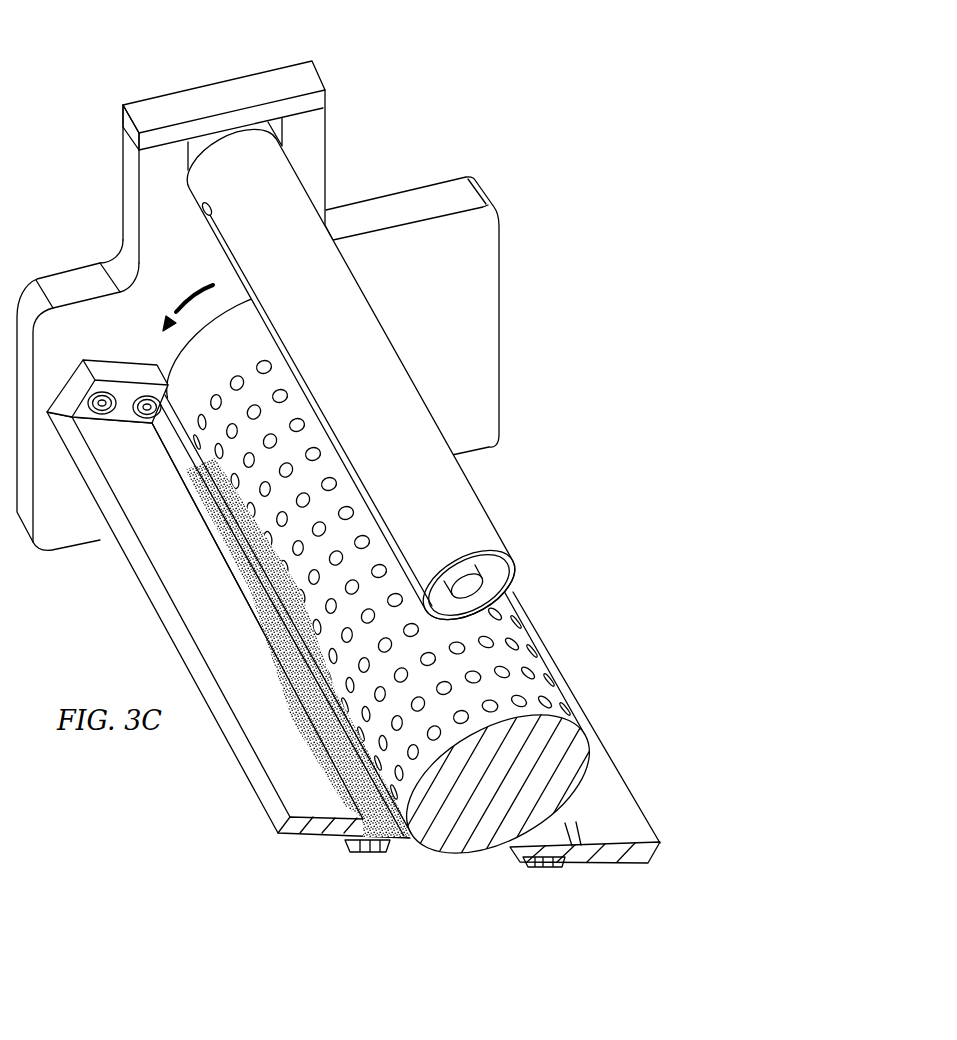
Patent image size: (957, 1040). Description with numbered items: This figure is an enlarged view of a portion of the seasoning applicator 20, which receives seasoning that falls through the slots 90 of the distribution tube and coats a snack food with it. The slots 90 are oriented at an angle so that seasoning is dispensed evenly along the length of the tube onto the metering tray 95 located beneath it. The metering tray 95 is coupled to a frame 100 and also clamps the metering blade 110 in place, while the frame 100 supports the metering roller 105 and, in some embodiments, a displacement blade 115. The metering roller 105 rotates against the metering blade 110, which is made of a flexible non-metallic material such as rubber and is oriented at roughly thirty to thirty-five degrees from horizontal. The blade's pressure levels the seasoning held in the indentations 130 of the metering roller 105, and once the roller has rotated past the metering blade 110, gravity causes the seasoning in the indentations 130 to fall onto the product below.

The seasoning applicator 20 is at (459, 38).
The slots 90 is at (477, 495).
The metering tray 95 is at (315, 817).
The frame 100 is at (499, 322).
The metering roller 105 is at (405, 597).
The metering blade 110 is at (408, 842).
The displacement blade 115 is at (517, 850).
The indentations 130 is at (233, 379).